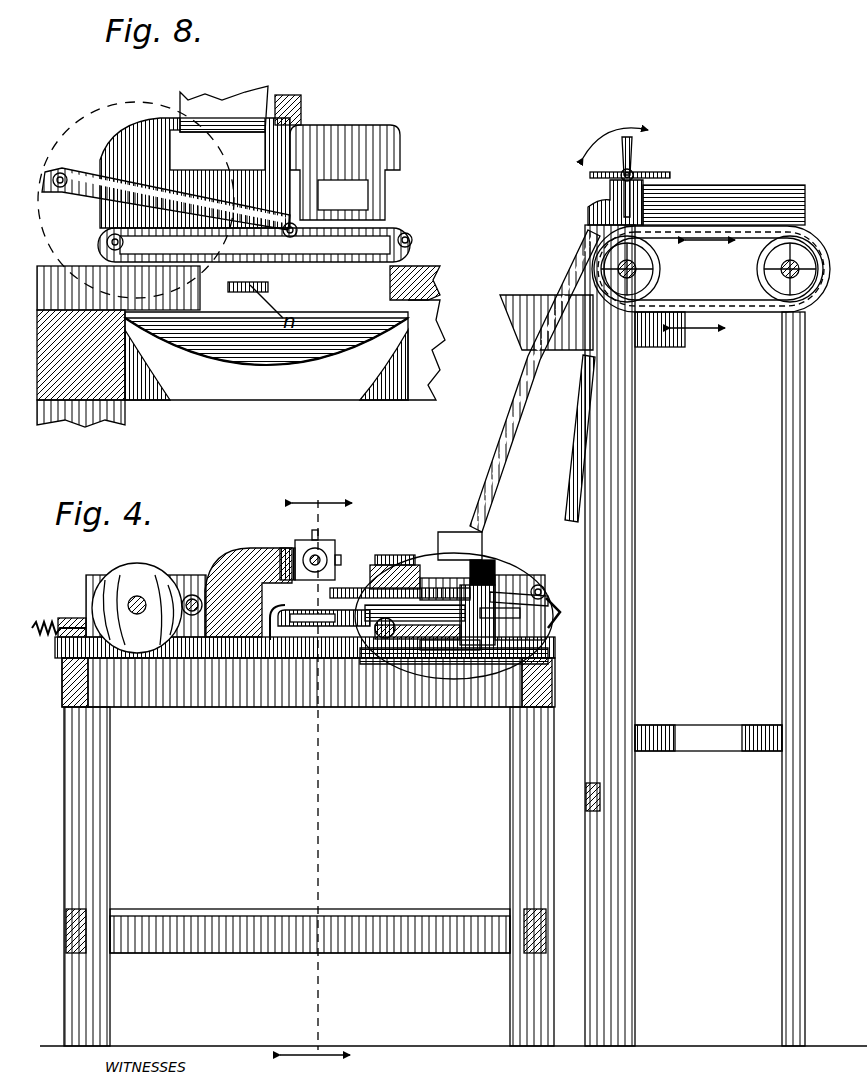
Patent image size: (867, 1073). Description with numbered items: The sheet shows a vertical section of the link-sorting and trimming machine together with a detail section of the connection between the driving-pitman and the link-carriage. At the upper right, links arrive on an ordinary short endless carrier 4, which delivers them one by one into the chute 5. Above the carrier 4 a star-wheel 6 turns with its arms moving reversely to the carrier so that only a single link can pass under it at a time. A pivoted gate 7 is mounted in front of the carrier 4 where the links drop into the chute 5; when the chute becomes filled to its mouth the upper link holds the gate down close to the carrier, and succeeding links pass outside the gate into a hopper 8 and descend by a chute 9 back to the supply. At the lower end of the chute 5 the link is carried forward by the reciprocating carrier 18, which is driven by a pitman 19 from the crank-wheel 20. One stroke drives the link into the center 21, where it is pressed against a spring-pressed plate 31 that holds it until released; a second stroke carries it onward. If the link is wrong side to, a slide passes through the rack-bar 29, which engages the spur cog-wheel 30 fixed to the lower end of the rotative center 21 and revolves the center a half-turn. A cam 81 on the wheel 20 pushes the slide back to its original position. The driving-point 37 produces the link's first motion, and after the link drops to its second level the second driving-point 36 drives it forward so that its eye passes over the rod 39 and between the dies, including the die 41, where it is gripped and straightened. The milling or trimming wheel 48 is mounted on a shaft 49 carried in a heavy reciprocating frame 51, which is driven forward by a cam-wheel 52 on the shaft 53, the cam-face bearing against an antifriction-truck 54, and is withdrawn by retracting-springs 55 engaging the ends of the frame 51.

In FIG. 4, the short endless carrier 4 is at (735, 228).
In FIG. 8, the chute 5 is at (256, 92).
In FIG. 4, the chute 5 is at (500, 408).
In FIG. 4, the star-wheel 6 is at (633, 160).
In FIG. 4, the pivoted gate 7 is at (590, 225).
In FIG. 4, the hopper 8 is at (500, 322).
In FIG. 4, the chute 9 is at (567, 435).
In FIG. 8, the reciprocating carrier 18 is at (310, 350).
In FIG. 4, the reciprocating carrier 18 is at (445, 664).
In FIG. 8, the pitman 19 is at (93, 175).
In FIG. 4, the pitman 19 is at (532, 588).
In FIG. 8, the crank-wheel 20 is at (255, 242).
In FIG. 4, the crank-wheel 20 is at (505, 565).
In FIG. 8, the center 21 is at (365, 122).
In FIG. 4, the center 21 is at (463, 641).
In FIG. 4, the rack-bar 29 is at (376, 645).
In FIG. 8, the spur cog-wheel 30 is at (290, 275).
In FIG. 4, the spur cog-wheel 30 is at (392, 642).
In FIG. 4, the spring-pressed plate 31 is at (395, 568).
In FIG. 4, the second driving-point 36 is at (448, 590).
In FIG. 8, the driving-point 37 is at (143, 140).
In FIG. 4, the driving-point 37 is at (480, 560).
In FIG. 4, the rod 39 is at (342, 586).
In FIG. 4, the die 41 is at (275, 640).
In FIG. 4, the milling or trimming wheel 48 is at (340, 548).
In FIG. 4, the shaft 49 is at (305, 552).
In FIG. 4, the reciprocating frame 51 is at (248, 552).
In FIG. 4, the cam-wheel 52 is at (145, 578).
In FIG. 4, the shaft 53 is at (130, 600).
In FIG. 4, the antifriction-truck 54 is at (192, 595).
In FIG. 4, the retracting-springs 55 is at (42, 624).
In FIG. 4, the cam 81 is at (566, 617).